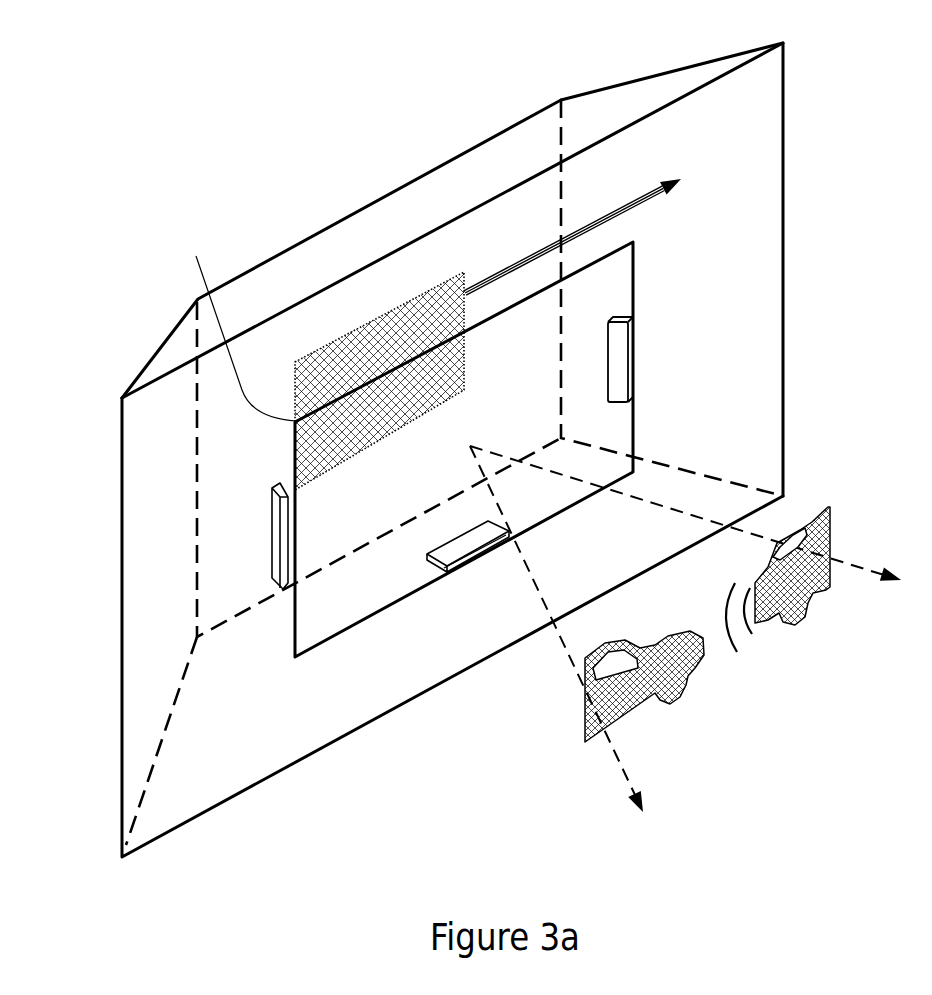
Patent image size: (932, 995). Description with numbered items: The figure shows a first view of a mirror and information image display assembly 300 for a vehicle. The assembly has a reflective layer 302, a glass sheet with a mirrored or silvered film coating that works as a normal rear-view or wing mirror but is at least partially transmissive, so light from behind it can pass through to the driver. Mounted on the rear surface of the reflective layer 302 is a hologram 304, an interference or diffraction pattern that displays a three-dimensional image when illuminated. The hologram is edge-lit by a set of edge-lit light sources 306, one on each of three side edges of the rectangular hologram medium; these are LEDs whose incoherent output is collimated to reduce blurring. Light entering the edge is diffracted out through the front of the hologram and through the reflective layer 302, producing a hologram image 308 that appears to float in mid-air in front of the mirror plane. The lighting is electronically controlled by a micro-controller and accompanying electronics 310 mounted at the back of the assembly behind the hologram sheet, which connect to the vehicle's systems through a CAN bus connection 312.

The mirror and information image display assembly 300 is at (255, 147).
The reflective layer 302 is at (760, 376).
The hologram 304 is at (343, 630).
The edge-lit light sources 306 is at (620, 367).
The hologram image 308 is at (592, 778).
The micro-controller and accompanying electronics 310 is at (417, 296).
The CAN bus connection 312 is at (625, 204).